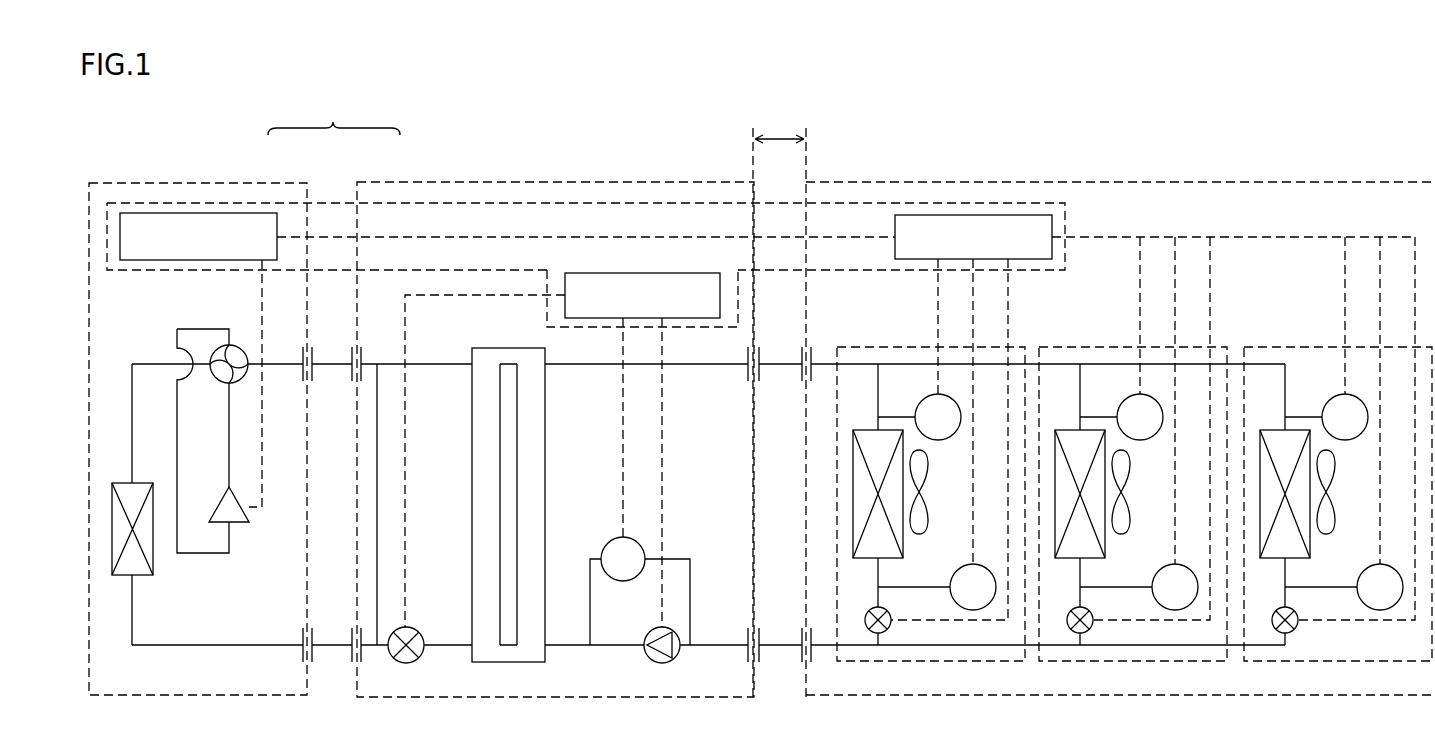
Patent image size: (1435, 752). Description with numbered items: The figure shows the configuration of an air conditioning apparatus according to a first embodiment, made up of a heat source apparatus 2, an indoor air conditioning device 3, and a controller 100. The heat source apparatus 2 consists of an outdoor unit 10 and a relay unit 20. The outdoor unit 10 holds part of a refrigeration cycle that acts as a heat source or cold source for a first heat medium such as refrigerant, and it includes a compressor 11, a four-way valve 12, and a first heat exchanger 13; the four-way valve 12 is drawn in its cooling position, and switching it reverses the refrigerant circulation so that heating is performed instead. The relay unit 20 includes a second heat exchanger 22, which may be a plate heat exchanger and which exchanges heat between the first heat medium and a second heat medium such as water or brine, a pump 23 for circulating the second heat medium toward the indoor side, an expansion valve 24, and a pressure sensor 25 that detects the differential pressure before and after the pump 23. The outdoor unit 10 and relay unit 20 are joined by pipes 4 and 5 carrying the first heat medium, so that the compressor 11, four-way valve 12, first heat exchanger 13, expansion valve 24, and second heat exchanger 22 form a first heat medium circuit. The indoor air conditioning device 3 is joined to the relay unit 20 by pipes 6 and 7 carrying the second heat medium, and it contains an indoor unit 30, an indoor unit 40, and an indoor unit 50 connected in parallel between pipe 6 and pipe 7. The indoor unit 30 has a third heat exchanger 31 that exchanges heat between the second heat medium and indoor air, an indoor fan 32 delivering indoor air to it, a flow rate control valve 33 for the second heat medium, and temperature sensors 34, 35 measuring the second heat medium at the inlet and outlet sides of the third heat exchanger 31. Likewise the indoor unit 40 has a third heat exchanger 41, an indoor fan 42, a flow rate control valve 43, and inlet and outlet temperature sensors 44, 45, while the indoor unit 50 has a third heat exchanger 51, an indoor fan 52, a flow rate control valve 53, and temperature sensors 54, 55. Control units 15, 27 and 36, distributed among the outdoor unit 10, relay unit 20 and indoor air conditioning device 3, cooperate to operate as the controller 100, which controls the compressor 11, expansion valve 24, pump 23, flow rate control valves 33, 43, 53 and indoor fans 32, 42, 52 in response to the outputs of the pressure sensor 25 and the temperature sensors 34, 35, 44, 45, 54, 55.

The controller 100 is at (135, 200).
The heat source apparatus 2 is at (334, 118).
The outdoor unit 10 is at (283, 183).
The relay unit 20 is at (380, 182).
The indoor air conditioning device 3 is at (845, 182).
The control unit 15 is at (196, 213).
The control unit 27 is at (635, 273).
The control unit 36 is at (968, 215).
The compressor 11 is at (238, 524).
The four-way valve 12 is at (214, 382).
The first heat exchanger 13 is at (146, 483).
The pipe 4 is at (331, 368).
The pipe 5 is at (331, 649).
The second heat exchanger 22 is at (546, 420).
The pump 23 is at (650, 632).
The expansion valve 24 is at (417, 632).
The pressure sensor 25 is at (607, 542).
The pipe 6 is at (778, 368).
The pipe 7 is at (778, 649).
The indoor unit 30 is at (960, 661).
The third heat exchanger 31 is at (862, 430).
The indoor fan 32 is at (927, 492).
The flow rate control valve 33 is at (868, 612).
The temperature sensor 34 is at (925, 401).
The temperature sensor 35 is at (956, 571).
The indoor unit 40 is at (1163, 661).
The third heat exchanger 41 is at (1065, 430).
The indoor fan 42 is at (1129, 492).
The flow rate control valve 43 is at (1070, 612).
The temperature sensor 44 is at (1127, 401).
The temperature sensor 45 is at (1158, 571).
The indoor unit 50 is at (1369, 661).
The third heat exchanger 51 is at (1270, 430).
The indoor fan 52 is at (1334, 492).
The flow rate control valve 53 is at (1274, 612).
The temperature sensor 54 is at (1331, 401).
The temperature sensor 55 is at (1362, 571).